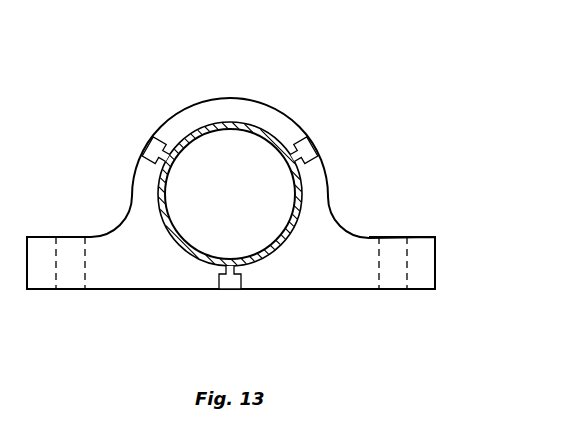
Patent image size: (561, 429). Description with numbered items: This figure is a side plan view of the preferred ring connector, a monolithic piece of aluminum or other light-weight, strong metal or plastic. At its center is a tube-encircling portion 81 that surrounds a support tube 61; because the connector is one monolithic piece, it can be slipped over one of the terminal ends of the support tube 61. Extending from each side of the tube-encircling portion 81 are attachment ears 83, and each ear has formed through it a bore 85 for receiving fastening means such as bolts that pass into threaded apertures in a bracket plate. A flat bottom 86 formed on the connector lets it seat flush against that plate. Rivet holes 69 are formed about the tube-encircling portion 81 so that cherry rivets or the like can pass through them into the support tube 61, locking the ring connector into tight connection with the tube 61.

The support tube 61 is at (302, 182).
The rivet holes 69 is at (148, 152).
The tube-encircling portion 81 is at (223, 105).
The attachment ears 83 is at (43, 283).
The bore 85 is at (70, 241).
The flat bottom 86 is at (295, 290).